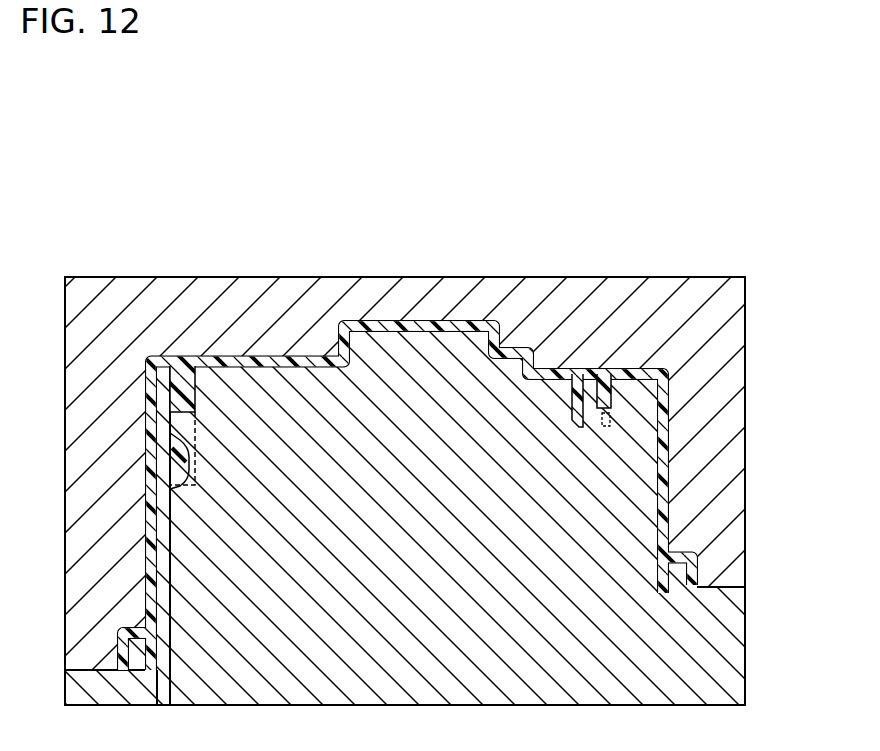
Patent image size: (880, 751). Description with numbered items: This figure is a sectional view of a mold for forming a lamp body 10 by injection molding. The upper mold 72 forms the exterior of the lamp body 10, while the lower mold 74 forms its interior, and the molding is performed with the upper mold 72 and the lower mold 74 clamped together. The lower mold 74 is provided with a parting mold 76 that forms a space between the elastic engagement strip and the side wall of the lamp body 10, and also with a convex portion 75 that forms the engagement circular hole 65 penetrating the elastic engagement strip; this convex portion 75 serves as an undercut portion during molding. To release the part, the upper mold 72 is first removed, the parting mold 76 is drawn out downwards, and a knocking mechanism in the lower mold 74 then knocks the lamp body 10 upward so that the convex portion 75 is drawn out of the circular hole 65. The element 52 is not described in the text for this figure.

The lamp body 10 is at (674, 477).
The protrusions 52 is at (613, 396).
The engagement circular hole 65 is at (173, 420).
The upper mold 72 is at (238, 329).
The lower mold 74 is at (440, 535).
The convex portion 75 is at (172, 428).
The parting mold 76 is at (146, 565).